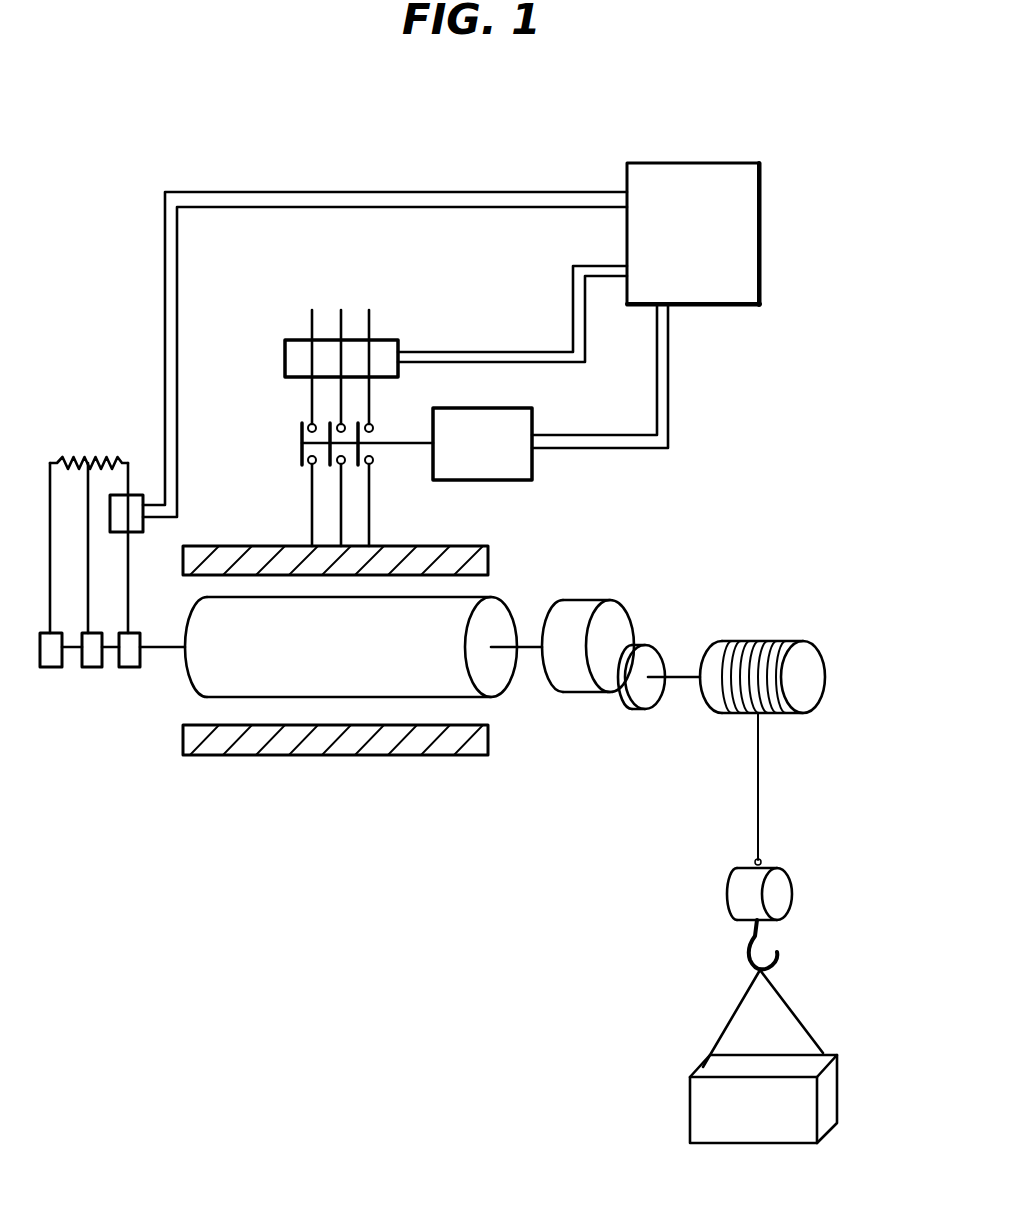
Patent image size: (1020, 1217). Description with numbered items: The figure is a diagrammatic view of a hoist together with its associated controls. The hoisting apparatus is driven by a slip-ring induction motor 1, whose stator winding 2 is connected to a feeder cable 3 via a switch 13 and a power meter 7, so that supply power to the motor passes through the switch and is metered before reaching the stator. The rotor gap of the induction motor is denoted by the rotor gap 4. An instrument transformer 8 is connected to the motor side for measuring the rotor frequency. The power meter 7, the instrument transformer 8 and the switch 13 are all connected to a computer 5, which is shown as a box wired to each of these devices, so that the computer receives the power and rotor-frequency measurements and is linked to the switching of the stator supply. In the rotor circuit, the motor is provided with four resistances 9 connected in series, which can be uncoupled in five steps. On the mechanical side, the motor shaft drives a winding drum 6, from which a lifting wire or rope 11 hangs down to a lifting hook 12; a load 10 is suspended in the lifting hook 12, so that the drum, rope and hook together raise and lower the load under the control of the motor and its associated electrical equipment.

The slip-ring induction motor 1 is at (183, 672).
The stator winding 2 is at (350, 748).
The feeder cable 3 is at (387, 310).
The rotor gap 4 is at (480, 708).
The computer 5 is at (763, 256).
The winding drum 6 is at (808, 655).
The power meter 7 is at (388, 345).
The instrument transformer 8 is at (133, 500).
The resistances 9 is at (84, 460).
The load 10 is at (832, 1082).
The lifting wire or rope 11 is at (760, 790).
The lifting hook 12 is at (767, 938).
The switch 13 is at (533, 470).